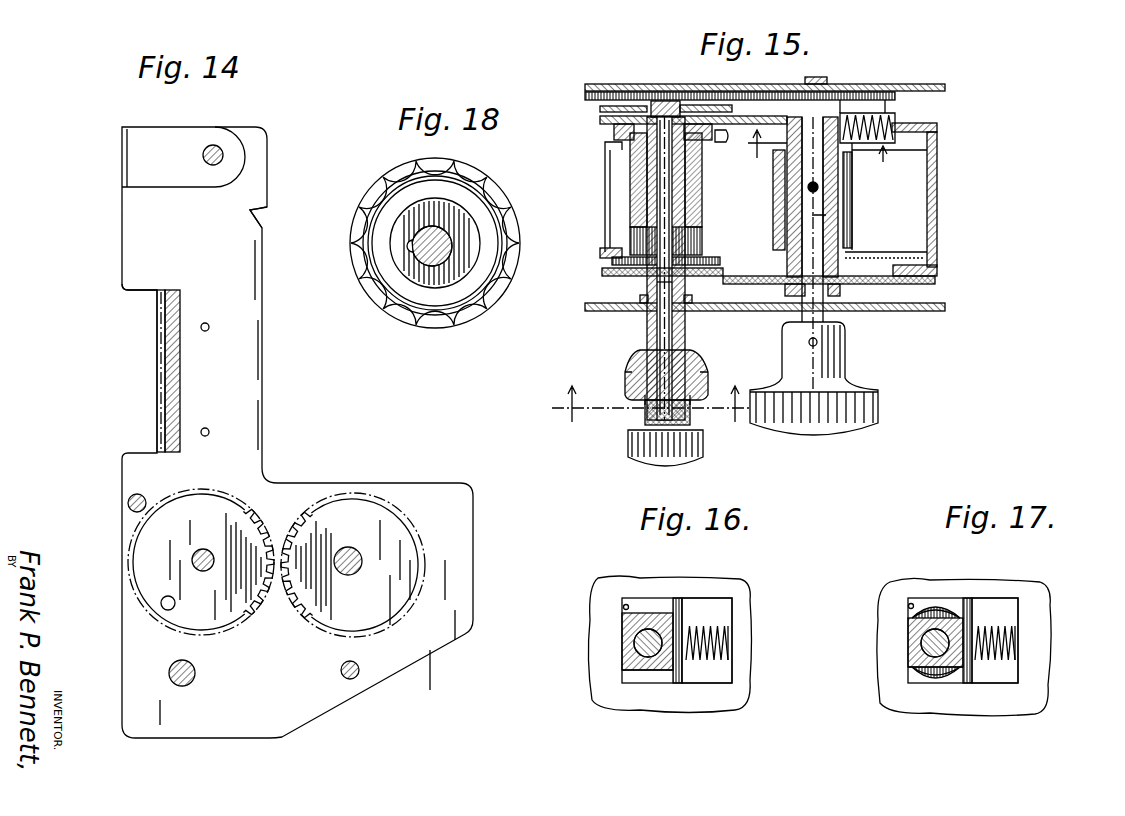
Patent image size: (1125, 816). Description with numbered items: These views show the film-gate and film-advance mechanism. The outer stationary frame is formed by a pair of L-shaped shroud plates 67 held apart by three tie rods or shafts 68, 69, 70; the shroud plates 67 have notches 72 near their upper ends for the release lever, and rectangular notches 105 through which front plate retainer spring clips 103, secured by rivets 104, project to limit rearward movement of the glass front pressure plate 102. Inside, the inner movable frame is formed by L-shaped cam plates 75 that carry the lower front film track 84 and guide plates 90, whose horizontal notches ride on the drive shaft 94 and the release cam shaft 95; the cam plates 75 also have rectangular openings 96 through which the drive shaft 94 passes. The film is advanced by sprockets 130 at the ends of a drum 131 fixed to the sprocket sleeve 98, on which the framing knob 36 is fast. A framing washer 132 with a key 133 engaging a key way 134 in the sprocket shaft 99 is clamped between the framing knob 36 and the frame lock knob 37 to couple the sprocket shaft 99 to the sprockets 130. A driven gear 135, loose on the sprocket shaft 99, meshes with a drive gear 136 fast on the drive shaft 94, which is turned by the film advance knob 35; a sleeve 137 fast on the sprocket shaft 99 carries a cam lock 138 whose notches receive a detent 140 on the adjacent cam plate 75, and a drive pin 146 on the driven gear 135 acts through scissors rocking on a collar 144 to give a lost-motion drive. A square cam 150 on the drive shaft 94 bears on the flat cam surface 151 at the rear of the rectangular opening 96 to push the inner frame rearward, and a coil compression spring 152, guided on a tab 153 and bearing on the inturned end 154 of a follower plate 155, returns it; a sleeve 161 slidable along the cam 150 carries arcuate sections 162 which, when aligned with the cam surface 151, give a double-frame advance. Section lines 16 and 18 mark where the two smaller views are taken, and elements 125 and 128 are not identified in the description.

In FIG. 15, the section line 16 is at (821, 157).
In FIG. 15, the section line 18 is at (652, 411).
In FIG. 15, the film advance knob 35 is at (878, 404).
In FIG. 18, the framing knob 36 is at (474, 197).
In FIG. 15, the framing knob 36 is at (697, 363).
In FIG. 15, the frame lock knob 37 is at (704, 450).
In FIG. 14, the shroud plates 67 is at (252, 311).
In FIG. 15, the shroud plates 67 is at (933, 84).
In FIG. 14, the tie rod or shaft 68 is at (216, 146).
In FIG. 14, the tie rod or shaft 69 is at (128, 500).
In FIG. 14, the tie rod or shaft 70 is at (359, 665).
In FIG. 14, the notches 72 is at (264, 210).
In FIG. 15, the cam plates 75 is at (755, 276).
In FIG. 16, the cam plates 75 is at (751, 644).
In FIG. 17, the cam plates 75 is at (1048, 612).
In FIG. 15, the lower front film track 84 is at (913, 172).
In FIG. 15, the guide plate 90 is at (745, 115).
In FIG. 14, the drive shaft 94 is at (349, 547).
In FIG. 15, the drive shaft 94 is at (812, 214).
In FIG. 16, the drive shaft 94 is at (632, 645).
In FIG. 17, the drive shaft 94 is at (912, 650).
In FIG. 14, the release cam shaft 95 is at (197, 686).
In FIG. 16, the rectangular openings 96 is at (720, 612).
In FIG. 17, the rectangular openings 96 is at (993, 610).
In FIG. 15, the sprocket sleeve 98 is at (650, 325).
In FIG. 14, the sprocket shaft 99 is at (207, 549).
In FIG. 15, the sprocket shaft 99 is at (658, 288).
In FIG. 14, the front transparent pressure plate 102 is at (181, 358).
In FIG. 14, the front plate retainer spring clips 103 is at (156, 375).
In FIG. 14, the rivets 104 is at (208, 323).
In FIG. 14, the rectangular notches 105 is at (142, 316).
In FIG. 14, the top plate 125 is at (170, 133).
In FIG. 15, the housing 128 is at (606, 180).
In FIG. 15, the sprockets 130 is at (612, 137).
In FIG. 15, the drum 131 is at (628, 197).
In FIG. 18, the framing washer 132 is at (460, 270).
In FIG. 15, the framing washer 132 is at (645, 408).
In FIG. 18, the key 133 is at (415, 247).
In FIG. 18, the key way 134 is at (418, 243).
In FIG. 15, the key way 134 is at (624, 378).
In FIG. 14, the driven gear 135 is at (247, 612).
In FIG. 15, the driven gear 135 is at (587, 97).
In FIG. 14, the drive gear 136 is at (405, 574).
In FIG. 15, the drive gear 136 is at (850, 112).
In FIG. 15, the sleeve 137 is at (630, 155).
In FIG. 15, the cam lock 138 is at (645, 92).
In FIG. 15, the detent 140 is at (602, 118).
In FIG. 15, the collar 144 is at (665, 98).
In FIG. 14, the drive pin 146 is at (165, 611).
In FIG. 15, the cam 150 is at (847, 259).
In FIG. 16, the cam 150 is at (624, 667).
In FIG. 17, the cam 150 is at (910, 663).
In FIG. 16, the flat cam surface 151 is at (622, 605).
In FIG. 17, the flat cam surface 151 is at (909, 606).
In FIG. 15, the coil compression spring 152 is at (890, 113).
In FIG. 16, the coil compression spring 152 is at (698, 660).
In FIG. 17, the coil compression spring 152 is at (990, 662).
In FIG. 15, the tab 153 is at (937, 142).
In FIG. 16, the tab 153 is at (714, 660).
In FIG. 17, the tab 153 is at (1010, 645).
In FIG. 15, the inturned end 154 is at (886, 100).
In FIG. 16, the inturned end 154 is at (665, 598).
In FIG. 17, the inturned end 154 is at (967, 598).
In FIG. 15, the follower plate 155 is at (805, 86).
In FIG. 15, the sleeve 161 is at (850, 197).
In FIG. 15, the arcuate sections 162 is at (778, 162).
In FIG. 17, the arcuate sections 162 is at (932, 603).